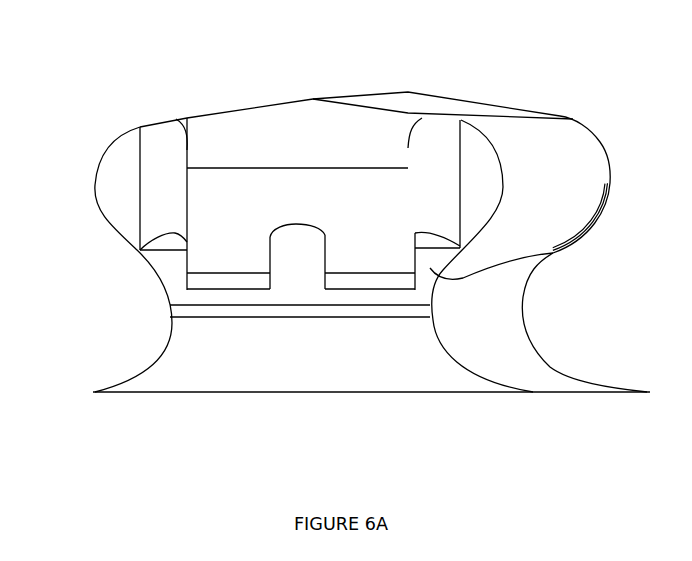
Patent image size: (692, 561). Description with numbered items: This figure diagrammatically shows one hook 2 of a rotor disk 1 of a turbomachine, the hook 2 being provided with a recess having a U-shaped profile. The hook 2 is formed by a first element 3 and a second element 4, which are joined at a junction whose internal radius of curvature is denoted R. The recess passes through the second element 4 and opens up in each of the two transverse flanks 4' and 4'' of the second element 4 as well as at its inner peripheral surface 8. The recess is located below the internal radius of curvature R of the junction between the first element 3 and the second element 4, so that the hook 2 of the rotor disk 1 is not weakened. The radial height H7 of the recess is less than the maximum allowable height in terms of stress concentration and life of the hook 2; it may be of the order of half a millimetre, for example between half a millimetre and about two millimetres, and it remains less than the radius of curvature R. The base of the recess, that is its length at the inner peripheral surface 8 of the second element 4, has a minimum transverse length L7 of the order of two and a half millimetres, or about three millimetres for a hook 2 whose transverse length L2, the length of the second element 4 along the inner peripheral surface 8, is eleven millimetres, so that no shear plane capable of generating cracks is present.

The rotor disk 1 is at (598, 138).
The hook 2 is at (150, 170).
The first element 3 is at (440, 158).
The second element 4 is at (349, 285).
The transverse flank 4' is at (518, 183).
The transverse flank 4'' is at (499, 281).
The inner peripheral surface 8 is at (207, 290).
The internal radius of curvature R is at (563, 250).
The transverse length of the hook L2 is at (408, 290).
The height of the recess H7 is at (273, 225).
The transverse length of the recess L7 is at (325, 298).